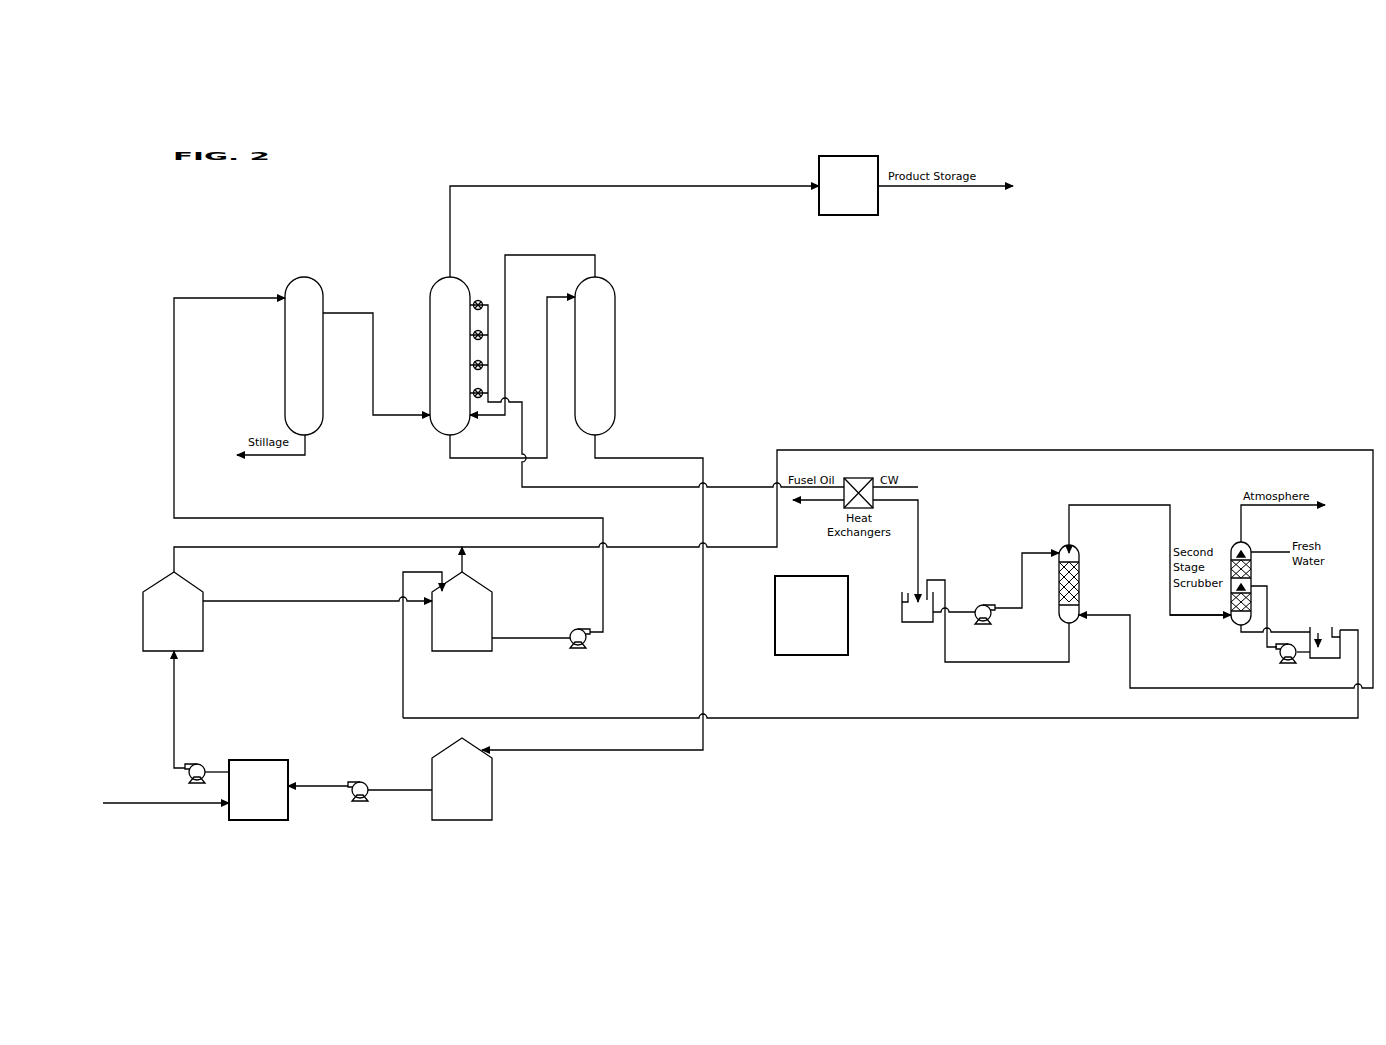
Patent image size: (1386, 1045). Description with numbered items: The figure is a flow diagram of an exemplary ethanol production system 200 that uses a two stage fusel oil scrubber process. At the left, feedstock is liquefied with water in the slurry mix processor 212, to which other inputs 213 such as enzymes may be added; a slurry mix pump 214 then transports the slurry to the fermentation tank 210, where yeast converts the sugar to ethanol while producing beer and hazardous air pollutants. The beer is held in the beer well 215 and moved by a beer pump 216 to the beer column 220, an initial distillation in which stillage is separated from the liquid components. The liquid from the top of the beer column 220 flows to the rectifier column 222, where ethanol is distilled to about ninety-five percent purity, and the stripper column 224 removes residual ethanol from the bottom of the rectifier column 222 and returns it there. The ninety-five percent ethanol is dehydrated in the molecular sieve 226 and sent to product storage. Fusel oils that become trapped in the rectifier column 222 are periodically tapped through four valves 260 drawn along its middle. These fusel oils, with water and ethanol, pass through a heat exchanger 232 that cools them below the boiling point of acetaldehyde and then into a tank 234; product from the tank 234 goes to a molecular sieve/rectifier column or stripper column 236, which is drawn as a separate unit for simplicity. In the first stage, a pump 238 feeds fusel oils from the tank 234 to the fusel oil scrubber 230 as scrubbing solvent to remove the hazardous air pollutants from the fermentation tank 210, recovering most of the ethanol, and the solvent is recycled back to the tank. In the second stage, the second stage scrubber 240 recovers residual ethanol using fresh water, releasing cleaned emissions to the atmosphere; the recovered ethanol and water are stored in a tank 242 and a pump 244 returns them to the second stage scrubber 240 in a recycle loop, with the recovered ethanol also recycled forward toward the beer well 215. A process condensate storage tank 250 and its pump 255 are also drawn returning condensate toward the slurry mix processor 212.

The ethanol production system 200 is at (336, 204).
The fermentation tank 210 is at (143, 607).
The slurry mix processor 212 is at (259, 759).
The other inputs 213 is at (123, 804).
The slurry mix pump 214 is at (198, 761).
The beer well 215 is at (492, 600).
The beer pump 216 is at (588, 648).
The beer column 220 is at (290, 287).
The rectifier column 222 is at (436, 287).
The stripper column 224 is at (612, 281).
The molecular sieve 226 is at (847, 156).
The fusel oil scrubber 230 is at (1075, 551).
The heat exchanger 232 is at (853, 478).
The tank 234 is at (912, 623).
The molecular sieve/rectifier column or stripper column 236 is at (800, 656).
The pump 238 is at (983, 600).
The second stage scrubber 240 is at (1253, 570).
The tank 242 is at (1342, 652).
The pump 244 is at (1279, 665).
The process condensate storage tank 250 is at (492, 806).
The pump 255 is at (361, 778).
The valves 260 is at (480, 300).